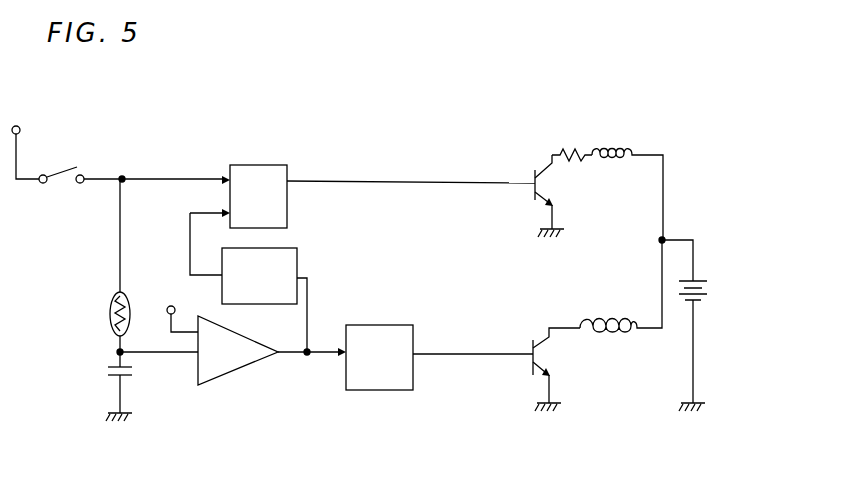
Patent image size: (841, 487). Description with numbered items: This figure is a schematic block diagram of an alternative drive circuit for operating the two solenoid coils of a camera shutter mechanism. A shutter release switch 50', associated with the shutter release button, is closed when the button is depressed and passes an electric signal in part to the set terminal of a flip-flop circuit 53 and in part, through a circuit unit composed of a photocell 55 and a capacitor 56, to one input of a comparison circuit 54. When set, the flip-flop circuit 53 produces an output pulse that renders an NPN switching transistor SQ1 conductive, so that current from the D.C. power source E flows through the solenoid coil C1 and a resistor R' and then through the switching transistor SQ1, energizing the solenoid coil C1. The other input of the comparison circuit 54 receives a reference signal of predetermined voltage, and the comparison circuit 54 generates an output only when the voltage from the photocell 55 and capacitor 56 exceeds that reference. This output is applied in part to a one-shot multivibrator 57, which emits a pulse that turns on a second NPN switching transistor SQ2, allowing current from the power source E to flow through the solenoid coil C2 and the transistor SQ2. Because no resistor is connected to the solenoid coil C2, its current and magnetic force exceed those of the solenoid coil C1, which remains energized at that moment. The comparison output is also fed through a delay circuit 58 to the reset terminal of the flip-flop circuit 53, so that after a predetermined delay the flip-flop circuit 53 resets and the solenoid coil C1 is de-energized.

The shutter release switch 50' is at (121, 142).
The flip-flop circuit 53 is at (263, 165).
The comparison circuit 54 is at (242, 371).
The photocell 55 is at (110, 322).
The capacitor 56 is at (108, 377).
The one-shot multivibrator 57 is at (388, 390).
The delay circuit 58 is at (298, 260).
The switching transistor SQ1 is at (534, 198).
The second switching transistor SQ2 is at (530, 366).
The resistor R' is at (569, 122).
The solenoid coil C1 is at (623, 146).
The solenoid coil C2 is at (612, 318).
The D.C. power source E is at (703, 284).